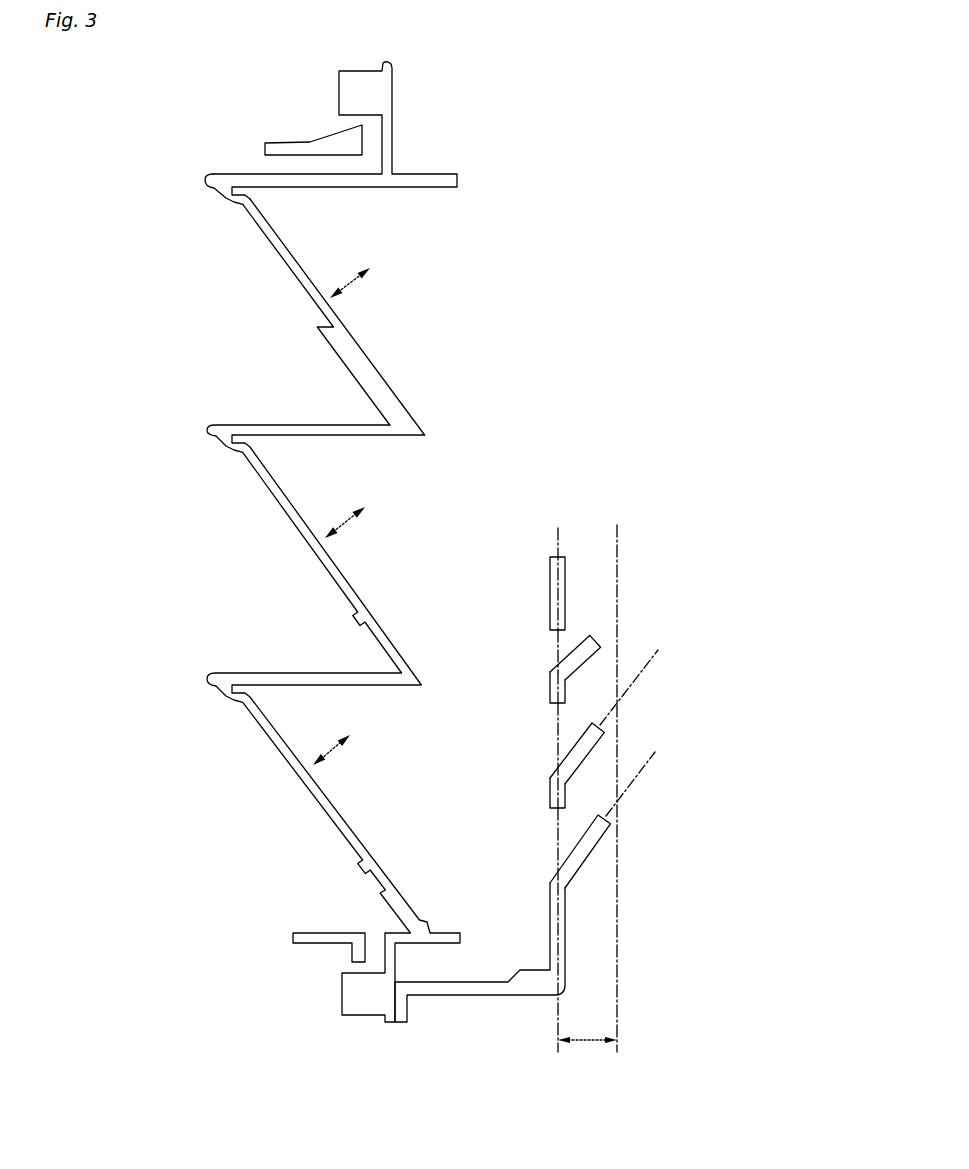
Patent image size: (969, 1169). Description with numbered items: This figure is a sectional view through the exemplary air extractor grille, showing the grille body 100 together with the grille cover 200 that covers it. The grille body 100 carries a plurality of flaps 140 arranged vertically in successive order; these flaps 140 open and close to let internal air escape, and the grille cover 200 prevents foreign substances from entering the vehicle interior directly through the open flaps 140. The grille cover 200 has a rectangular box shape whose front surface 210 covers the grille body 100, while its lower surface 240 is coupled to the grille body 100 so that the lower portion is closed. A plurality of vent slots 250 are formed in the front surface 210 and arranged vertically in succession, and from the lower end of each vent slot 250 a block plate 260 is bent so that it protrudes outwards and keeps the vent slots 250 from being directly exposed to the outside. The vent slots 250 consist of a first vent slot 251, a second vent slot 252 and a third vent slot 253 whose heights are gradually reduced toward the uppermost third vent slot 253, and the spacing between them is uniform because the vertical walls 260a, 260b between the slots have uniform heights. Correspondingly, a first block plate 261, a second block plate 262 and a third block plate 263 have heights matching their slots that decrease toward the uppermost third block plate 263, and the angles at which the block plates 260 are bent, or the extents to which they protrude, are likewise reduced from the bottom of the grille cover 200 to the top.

The grille body 100 is at (289, 542).
The flaps 140 is at (378, 367).
The grille cover 200 is at (631, 807).
The front surface 210 is at (549, 573).
The lower surface 240 is at (463, 993).
The vent slots 250 is at (465, 745).
The first vent slot 251 is at (549, 845).
The second vent slot 252 is at (549, 738).
The third vent slot 253 is at (549, 648).
The block plate 260 is at (622, 733).
The vertical wall 260a is at (548, 797).
The vertical wall 260b is at (549, 688).
The first block plate 261 is at (609, 827).
The second block plate 262 is at (601, 763).
The third block plate 263 is at (588, 641).